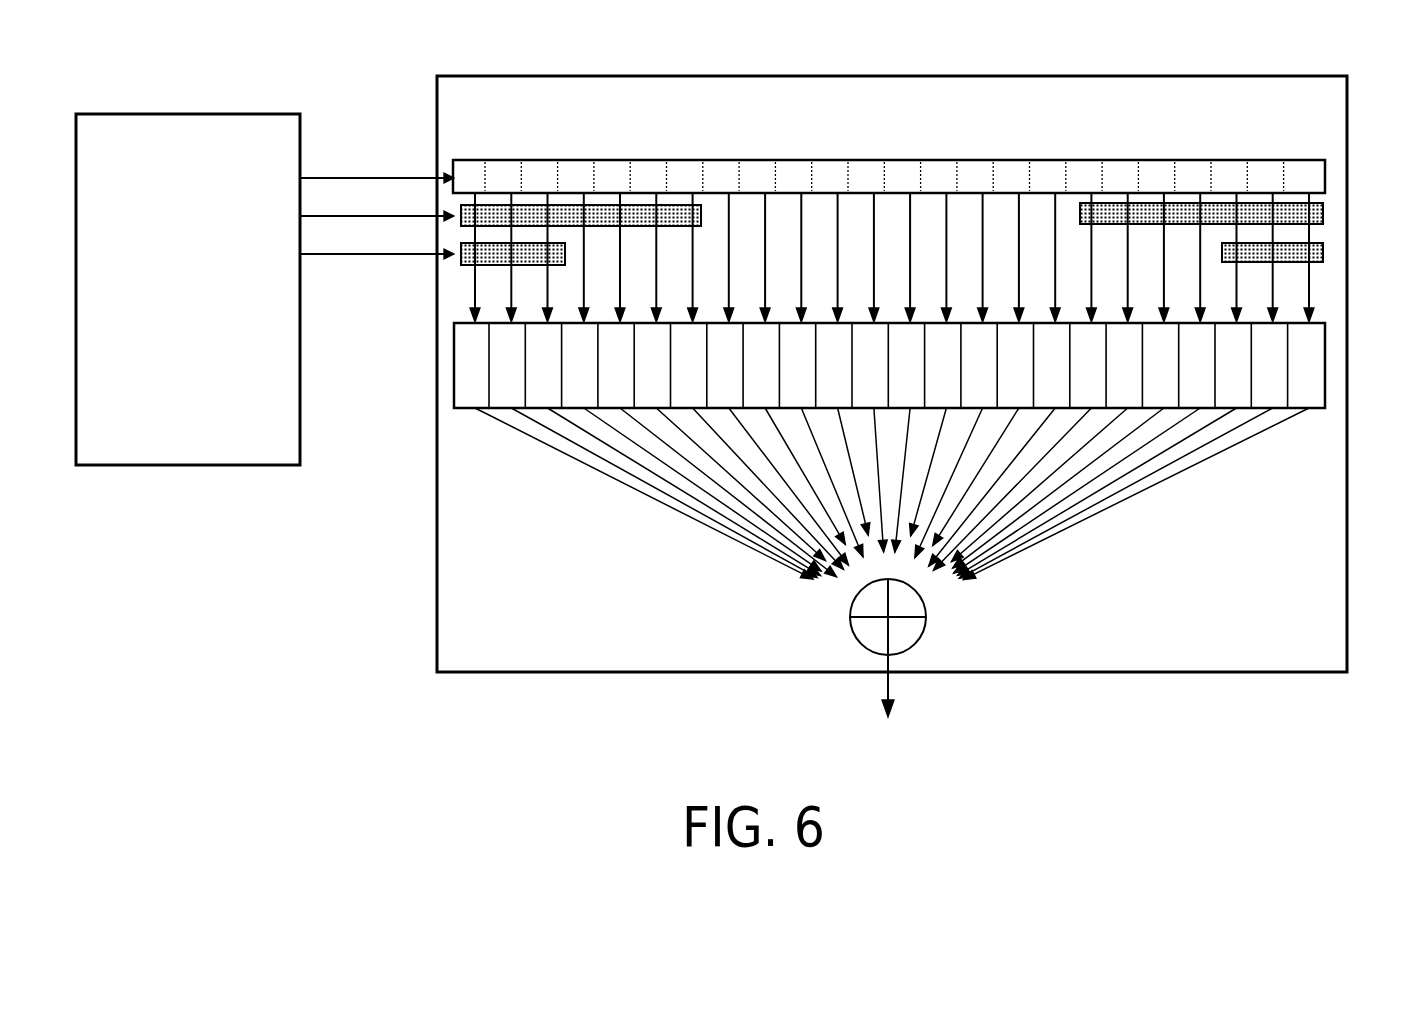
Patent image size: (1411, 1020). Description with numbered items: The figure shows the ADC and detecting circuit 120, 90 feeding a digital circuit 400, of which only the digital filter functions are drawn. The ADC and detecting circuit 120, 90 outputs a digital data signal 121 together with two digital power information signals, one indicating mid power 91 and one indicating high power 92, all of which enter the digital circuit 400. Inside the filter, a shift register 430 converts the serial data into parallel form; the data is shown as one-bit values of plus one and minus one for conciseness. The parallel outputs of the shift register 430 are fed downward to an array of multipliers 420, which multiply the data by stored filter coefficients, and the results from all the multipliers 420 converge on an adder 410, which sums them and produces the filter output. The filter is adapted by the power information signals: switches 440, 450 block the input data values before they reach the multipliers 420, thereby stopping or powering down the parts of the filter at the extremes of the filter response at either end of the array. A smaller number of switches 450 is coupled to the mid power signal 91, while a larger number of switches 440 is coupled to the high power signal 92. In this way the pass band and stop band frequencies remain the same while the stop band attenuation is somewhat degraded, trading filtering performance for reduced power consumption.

The ADC 120 is at (188, 328).
The detecting circuit 90 is at (188, 468).
The digital data signal 121 is at (377, 177).
The high power signal 92 is at (380, 217).
The mid power signal 91 is at (340, 257).
The digital circuit 400 is at (473, 676).
The shift register 430 is at (1273, 160).
The switches 440 is at (500, 207).
The switches 450 is at (488, 257).
The multipliers 420 is at (1323, 365).
The adder 410 is at (925, 633).